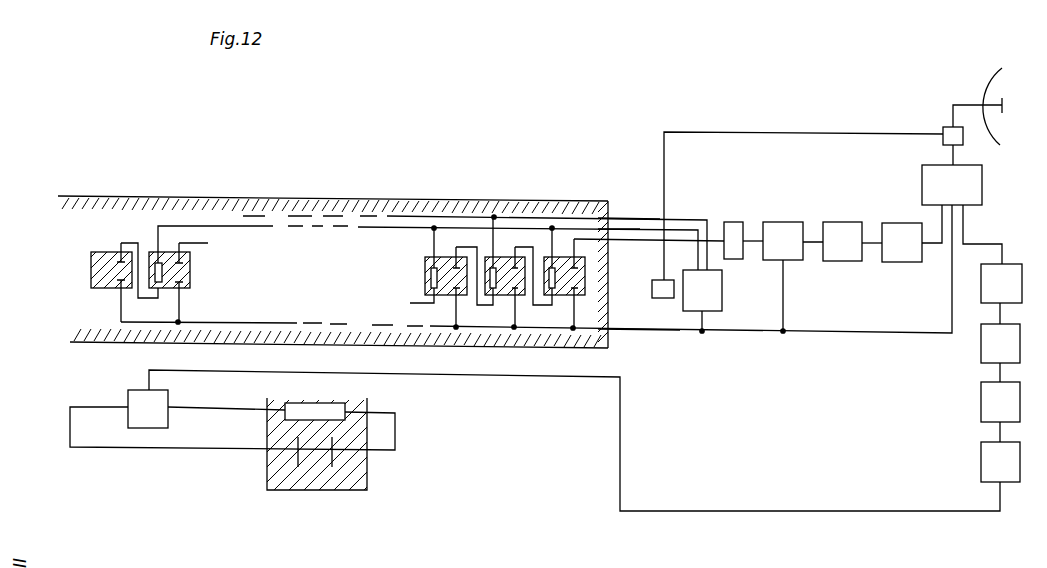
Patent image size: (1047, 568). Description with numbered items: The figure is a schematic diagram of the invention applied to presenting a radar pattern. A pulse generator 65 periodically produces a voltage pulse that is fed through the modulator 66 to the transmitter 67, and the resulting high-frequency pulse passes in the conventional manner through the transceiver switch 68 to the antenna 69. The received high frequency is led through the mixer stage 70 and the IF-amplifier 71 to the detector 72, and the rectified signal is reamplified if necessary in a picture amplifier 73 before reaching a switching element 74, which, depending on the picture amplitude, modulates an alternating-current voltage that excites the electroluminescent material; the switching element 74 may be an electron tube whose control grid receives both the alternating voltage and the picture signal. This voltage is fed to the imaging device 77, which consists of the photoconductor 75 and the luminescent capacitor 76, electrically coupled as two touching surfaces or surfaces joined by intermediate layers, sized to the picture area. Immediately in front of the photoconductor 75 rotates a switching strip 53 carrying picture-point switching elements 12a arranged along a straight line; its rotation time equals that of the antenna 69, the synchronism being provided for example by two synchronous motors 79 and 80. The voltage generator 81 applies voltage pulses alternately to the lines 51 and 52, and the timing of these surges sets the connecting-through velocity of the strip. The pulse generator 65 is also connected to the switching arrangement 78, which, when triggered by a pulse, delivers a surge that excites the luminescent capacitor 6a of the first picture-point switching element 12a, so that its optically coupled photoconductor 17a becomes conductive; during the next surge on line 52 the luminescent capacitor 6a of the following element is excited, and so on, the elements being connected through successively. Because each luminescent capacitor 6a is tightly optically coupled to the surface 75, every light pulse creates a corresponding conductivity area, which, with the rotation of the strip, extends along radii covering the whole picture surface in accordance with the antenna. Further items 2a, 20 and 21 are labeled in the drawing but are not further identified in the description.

The switching strip 53 is at (92, 223).
The photoconductor 17a is at (427, 258).
The picture-point switching element 12a is at (445, 263).
The luminescent capacitor 6a is at (457, 265).
The measuring cell 2a is at (508, 263).
The lead 20 is at (607, 238).
The line 51 is at (619, 230).
The line 52 is at (645, 220).
The return conductor 21 is at (653, 332).
The synchronous motor 80 is at (652, 287).
The voltage generator 81 is at (710, 297).
The switching arrangement 78 is at (733, 227).
The pulse generator 65 is at (782, 233).
The modulator 66 is at (837, 233).
The transmitter 67 is at (900, 233).
The transceiver switch 68 is at (932, 177).
The synchronous motor 79 is at (945, 127).
The antenna 69 is at (985, 88).
The mixer stage 70 is at (982, 287).
The IF-amplifier 71 is at (993, 352).
The detector 72 is at (993, 407).
The picture amplifier 73 is at (993, 462).
The switching element 74 is at (127, 396).
The photoconductor 75 is at (343, 410).
The luminescent capacitor 76 is at (313, 455).
The imaging device 77 is at (367, 485).